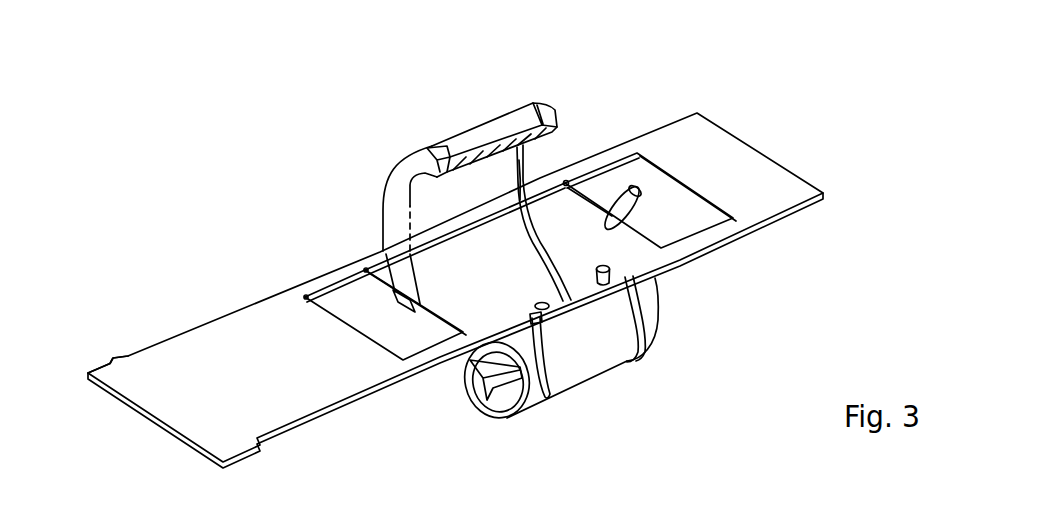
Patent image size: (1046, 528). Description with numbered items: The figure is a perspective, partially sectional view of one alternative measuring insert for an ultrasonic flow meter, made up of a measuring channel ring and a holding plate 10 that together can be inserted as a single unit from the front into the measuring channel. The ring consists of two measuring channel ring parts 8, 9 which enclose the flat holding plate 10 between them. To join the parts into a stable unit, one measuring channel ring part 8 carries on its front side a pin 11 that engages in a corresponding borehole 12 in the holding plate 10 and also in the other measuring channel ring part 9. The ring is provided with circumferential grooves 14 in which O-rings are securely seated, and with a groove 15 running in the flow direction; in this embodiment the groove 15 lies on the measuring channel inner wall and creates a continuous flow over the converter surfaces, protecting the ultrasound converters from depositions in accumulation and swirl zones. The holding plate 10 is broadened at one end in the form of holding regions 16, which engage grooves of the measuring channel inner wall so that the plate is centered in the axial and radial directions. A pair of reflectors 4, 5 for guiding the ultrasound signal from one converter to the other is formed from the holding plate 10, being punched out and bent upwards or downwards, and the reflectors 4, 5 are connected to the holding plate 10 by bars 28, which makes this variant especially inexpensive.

The reflector 4 is at (415, 300).
The reflector 5 is at (624, 197).
The measuring channel ring part 8 is at (390, 188).
The measuring channel ring part 9 is at (458, 374).
The holding plate 10 is at (747, 162).
The pin 11 is at (610, 272).
The borehole 12 is at (607, 280).
The circumferential groove 14 is at (425, 150).
The groove 15 is at (553, 125).
The holding region 16 is at (112, 368).
The bar 28 is at (653, 233).